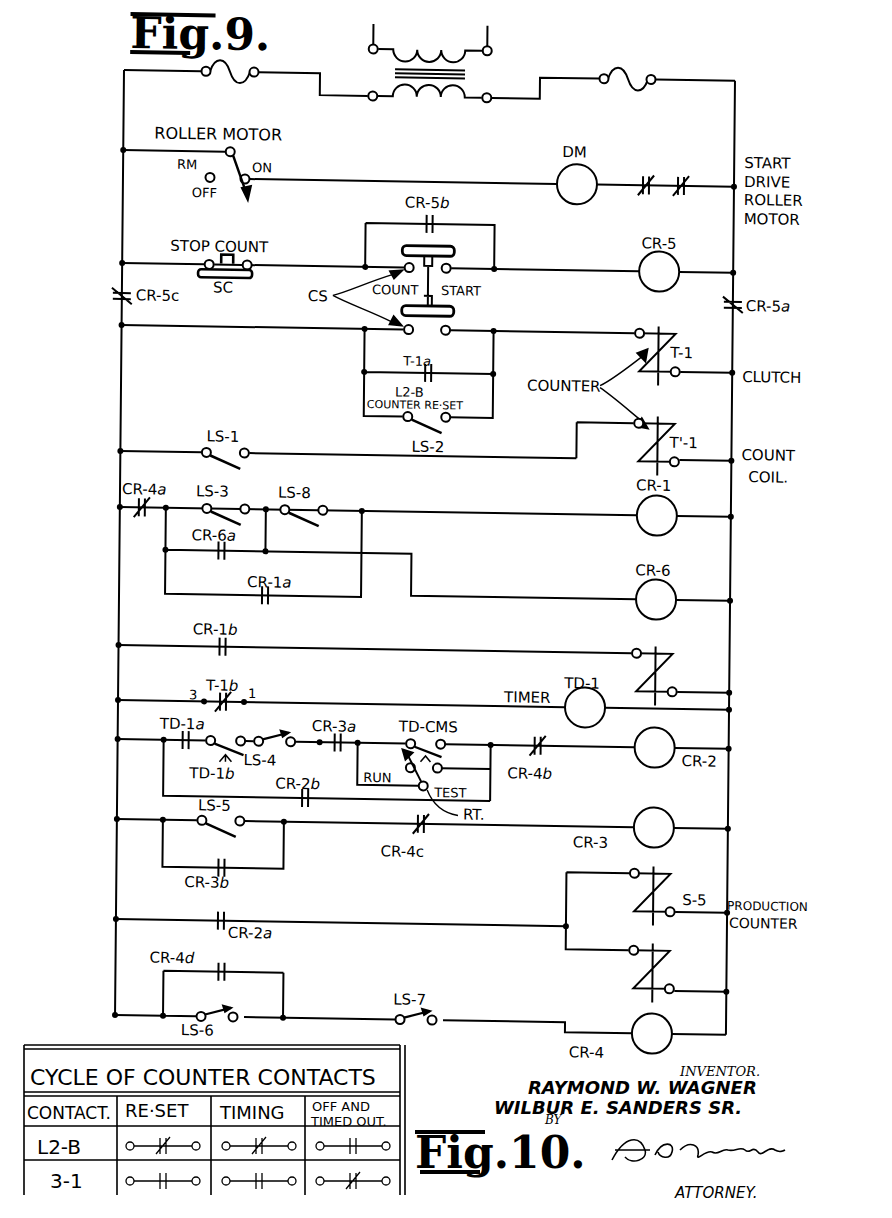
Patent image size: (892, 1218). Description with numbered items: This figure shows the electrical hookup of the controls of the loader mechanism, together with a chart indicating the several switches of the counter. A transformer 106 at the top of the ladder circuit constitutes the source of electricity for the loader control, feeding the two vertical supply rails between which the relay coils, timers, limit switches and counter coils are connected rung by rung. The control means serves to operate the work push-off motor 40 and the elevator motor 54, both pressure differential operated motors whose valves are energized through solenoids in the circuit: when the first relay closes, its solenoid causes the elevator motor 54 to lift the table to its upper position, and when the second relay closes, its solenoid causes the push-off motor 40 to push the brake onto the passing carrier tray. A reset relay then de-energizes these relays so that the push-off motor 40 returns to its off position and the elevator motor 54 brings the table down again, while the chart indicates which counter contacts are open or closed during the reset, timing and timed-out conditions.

The transformer 106 is at (497, 67).
The elevator pressure differential operated motor 54 is at (719, 662).
The push-off pressure differential operated motor 40 is at (716, 986).